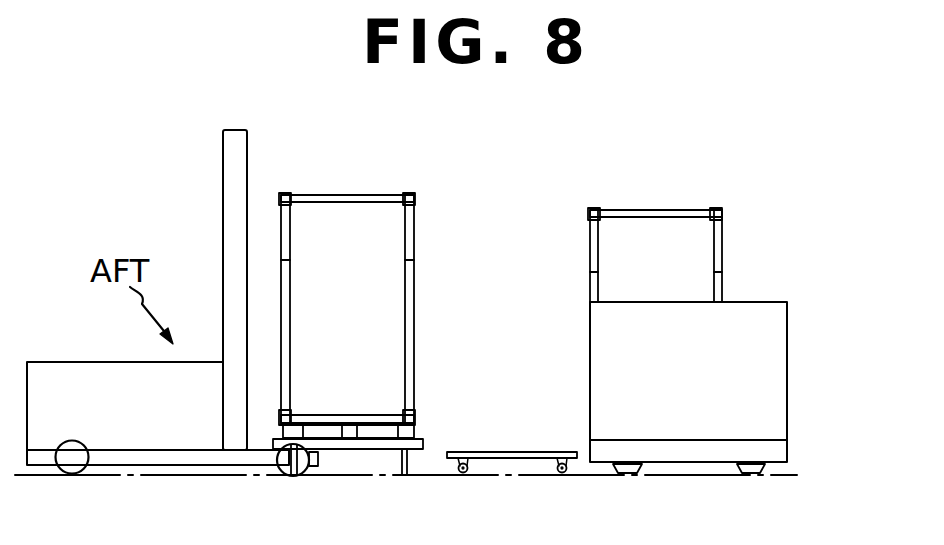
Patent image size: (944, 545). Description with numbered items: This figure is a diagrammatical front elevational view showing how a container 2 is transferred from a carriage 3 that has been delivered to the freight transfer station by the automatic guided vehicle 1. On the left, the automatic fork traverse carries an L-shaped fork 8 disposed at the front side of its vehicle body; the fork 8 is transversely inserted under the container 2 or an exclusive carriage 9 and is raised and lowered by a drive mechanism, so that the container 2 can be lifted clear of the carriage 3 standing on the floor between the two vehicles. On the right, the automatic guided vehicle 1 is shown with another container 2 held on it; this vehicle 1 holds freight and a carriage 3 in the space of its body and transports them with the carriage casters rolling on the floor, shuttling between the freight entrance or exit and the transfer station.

The automatic guided vehicle 1 is at (787, 389).
The container 2 is at (414, 290).
The carriage 3 is at (521, 458).
The fork 8 is at (318, 464).
The exclusive carriage 9 is at (385, 449).